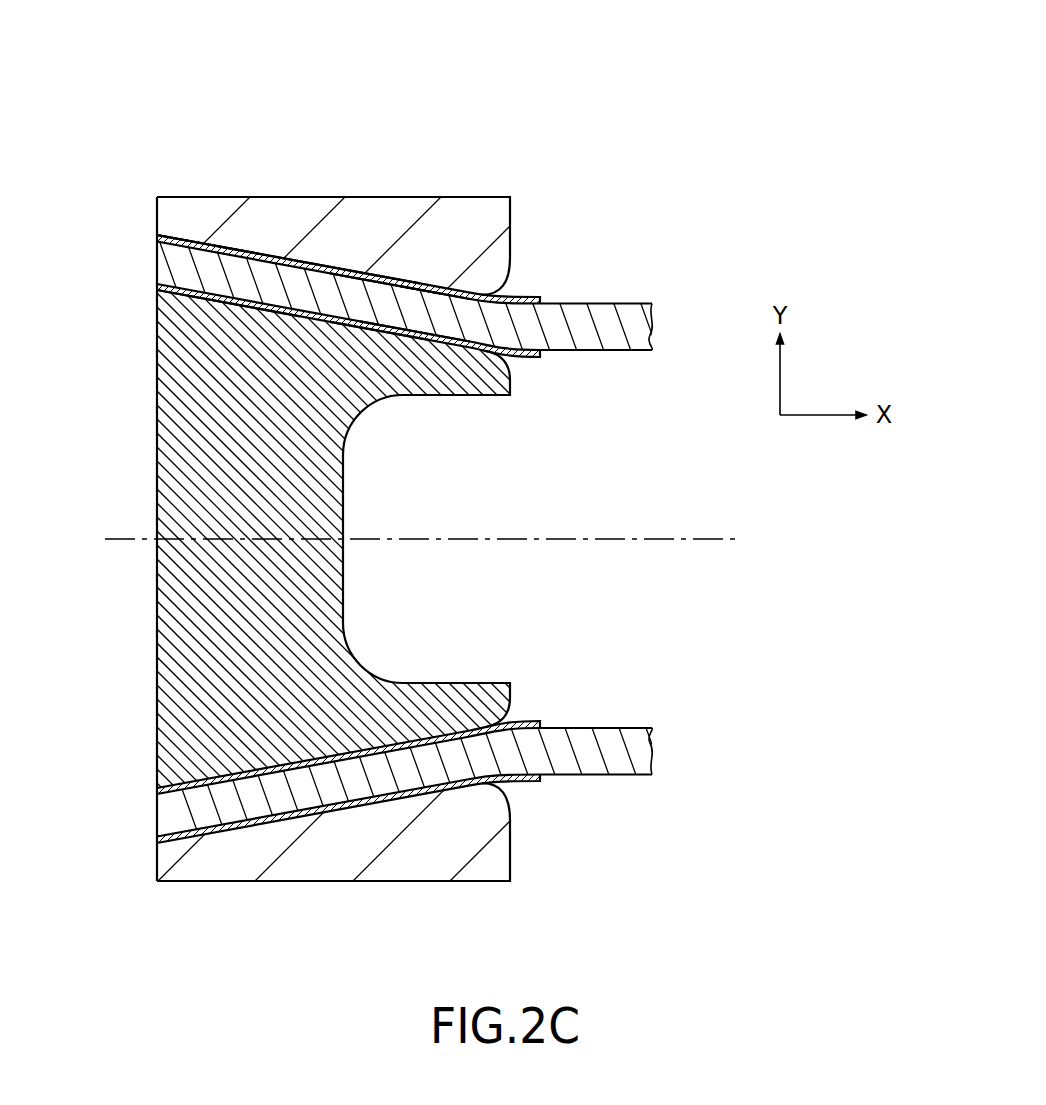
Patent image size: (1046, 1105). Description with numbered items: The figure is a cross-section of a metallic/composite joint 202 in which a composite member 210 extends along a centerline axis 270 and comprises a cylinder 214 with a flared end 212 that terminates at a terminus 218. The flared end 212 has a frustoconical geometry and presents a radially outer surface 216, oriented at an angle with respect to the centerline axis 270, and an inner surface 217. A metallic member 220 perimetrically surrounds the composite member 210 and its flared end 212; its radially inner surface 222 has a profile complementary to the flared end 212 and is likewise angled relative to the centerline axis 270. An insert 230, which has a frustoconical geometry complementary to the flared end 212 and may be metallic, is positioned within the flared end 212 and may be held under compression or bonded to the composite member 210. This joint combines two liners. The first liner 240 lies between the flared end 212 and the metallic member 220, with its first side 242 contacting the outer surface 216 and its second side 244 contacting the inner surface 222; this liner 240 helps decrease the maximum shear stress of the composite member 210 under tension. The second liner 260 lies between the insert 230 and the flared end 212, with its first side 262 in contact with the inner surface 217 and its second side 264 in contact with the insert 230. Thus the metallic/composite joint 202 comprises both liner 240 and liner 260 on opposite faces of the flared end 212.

The metallic/composite joint 202 is at (610, 104).
The composite member 210 is at (628, 306).
The flared end 212 is at (390, 297).
The cylinder 214 is at (610, 757).
The outer surface 216 is at (357, 277).
The inner surface 217 is at (250, 307).
The terminus 218 is at (118, 826).
The metallic member 220 is at (311, 208).
The inner surface 222 is at (217, 240).
The insert 230 is at (182, 722).
The liner 240 is at (520, 297).
The first side 242 is at (450, 312).
The second side 244 is at (229, 240).
The liner 260 is at (523, 358).
The first side 262 is at (423, 312).
The second side 264 is at (379, 350).
The centerline axis 270 is at (550, 539).